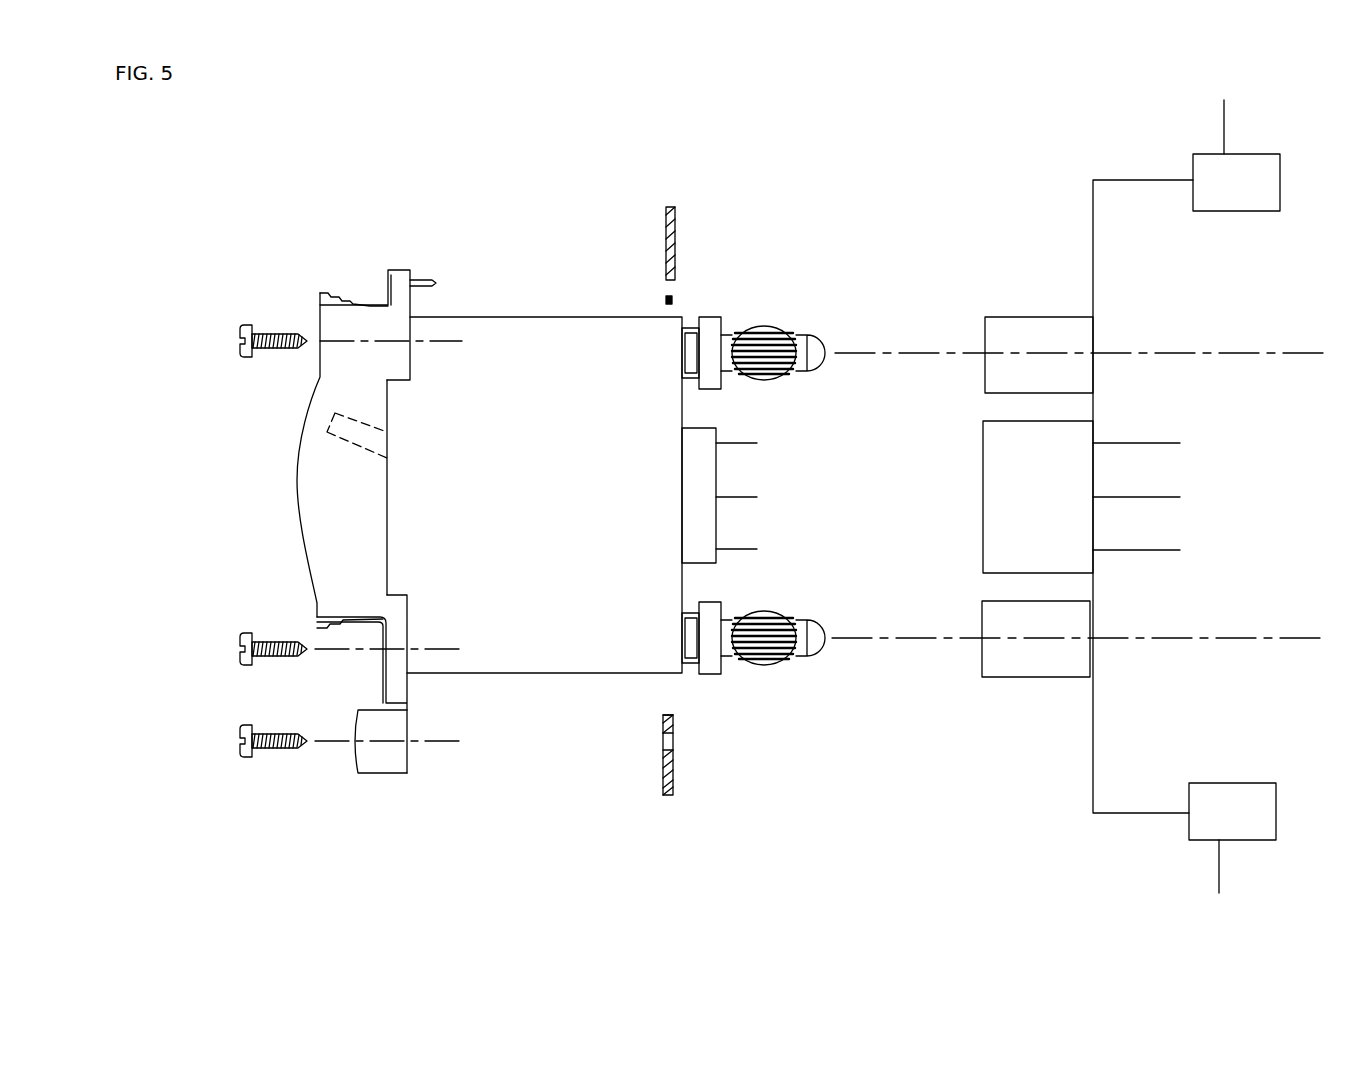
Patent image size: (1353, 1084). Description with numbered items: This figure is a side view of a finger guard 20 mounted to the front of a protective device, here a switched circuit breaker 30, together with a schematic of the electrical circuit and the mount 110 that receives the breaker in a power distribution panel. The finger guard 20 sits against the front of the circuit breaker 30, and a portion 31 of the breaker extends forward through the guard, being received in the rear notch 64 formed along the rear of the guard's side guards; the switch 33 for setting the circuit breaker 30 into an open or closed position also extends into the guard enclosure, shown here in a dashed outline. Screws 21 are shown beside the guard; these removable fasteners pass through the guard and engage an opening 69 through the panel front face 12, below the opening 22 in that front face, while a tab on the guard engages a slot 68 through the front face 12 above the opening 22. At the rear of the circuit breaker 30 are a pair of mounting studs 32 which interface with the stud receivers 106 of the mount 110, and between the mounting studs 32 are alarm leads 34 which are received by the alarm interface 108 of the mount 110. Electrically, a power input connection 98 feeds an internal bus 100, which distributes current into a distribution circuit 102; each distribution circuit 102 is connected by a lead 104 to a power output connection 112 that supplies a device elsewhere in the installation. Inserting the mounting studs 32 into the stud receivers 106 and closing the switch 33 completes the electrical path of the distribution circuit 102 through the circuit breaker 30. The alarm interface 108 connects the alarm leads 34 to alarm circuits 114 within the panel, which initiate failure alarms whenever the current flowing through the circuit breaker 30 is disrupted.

The finger guard 20 is at (368, 230).
The screws 21 is at (238, 341).
The opening 22 is at (674, 713).
The switched circuit breaker 30 is at (548, 462).
The portion of circuit breaker 31 is at (405, 391).
The mounting studs 32 is at (808, 327).
The switch 33 is at (330, 425).
The alarm leads 34 is at (743, 441).
The front face 12 is at (666, 240).
The rear notch 64 is at (363, 512).
The slot 68 is at (673, 286).
The opening 69 is at (674, 748).
The power input connection 98 is at (1228, 112).
The internal bus 100 is at (1262, 150).
The distribution circuit 102 is at (1093, 262).
The lead 104 is at (1255, 843).
The stud receivers 106 is at (1027, 317).
The alarm interface 108 is at (1065, 443).
The mount 110 is at (1075, 158).
The power output connection 112 is at (1222, 880).
The alarm circuits 114 is at (1163, 496).